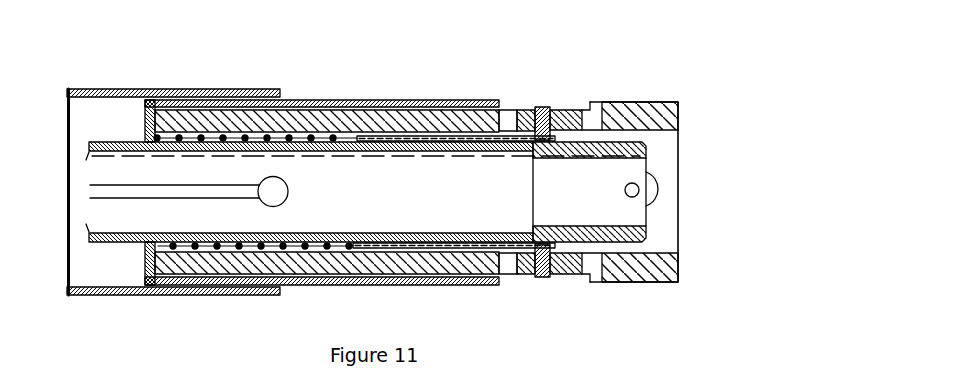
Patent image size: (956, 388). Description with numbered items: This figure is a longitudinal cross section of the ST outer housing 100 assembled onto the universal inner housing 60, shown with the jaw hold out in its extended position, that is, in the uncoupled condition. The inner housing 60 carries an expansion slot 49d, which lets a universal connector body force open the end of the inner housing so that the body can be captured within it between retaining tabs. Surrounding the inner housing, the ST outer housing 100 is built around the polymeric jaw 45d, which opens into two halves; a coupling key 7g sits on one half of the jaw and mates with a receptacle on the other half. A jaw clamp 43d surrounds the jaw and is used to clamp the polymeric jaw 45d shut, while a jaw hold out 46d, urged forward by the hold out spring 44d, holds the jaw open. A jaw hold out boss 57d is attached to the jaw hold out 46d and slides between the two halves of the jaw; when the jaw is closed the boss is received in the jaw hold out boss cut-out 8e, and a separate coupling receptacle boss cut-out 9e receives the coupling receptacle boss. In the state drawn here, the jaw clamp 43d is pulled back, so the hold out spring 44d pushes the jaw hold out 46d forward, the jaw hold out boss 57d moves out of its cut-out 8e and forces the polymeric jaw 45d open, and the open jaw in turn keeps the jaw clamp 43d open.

The ST outer housing 100 is at (363, 98).
The jaw hold out boss cut-out 8e is at (510, 110).
The jaw hold out boss 57d is at (542, 107).
The coupling receptacle boss cut-out 9e is at (593, 102).
The polymeric jaw 45d is at (680, 165).
The coupling key 7g is at (657, 183).
The universal inner housing 60 is at (647, 227).
The expansion slot 49d is at (110, 257).
The hold out spring 44d is at (262, 244).
The jaw hold out 46d is at (387, 247).
The jaw clamp 43d is at (447, 287).